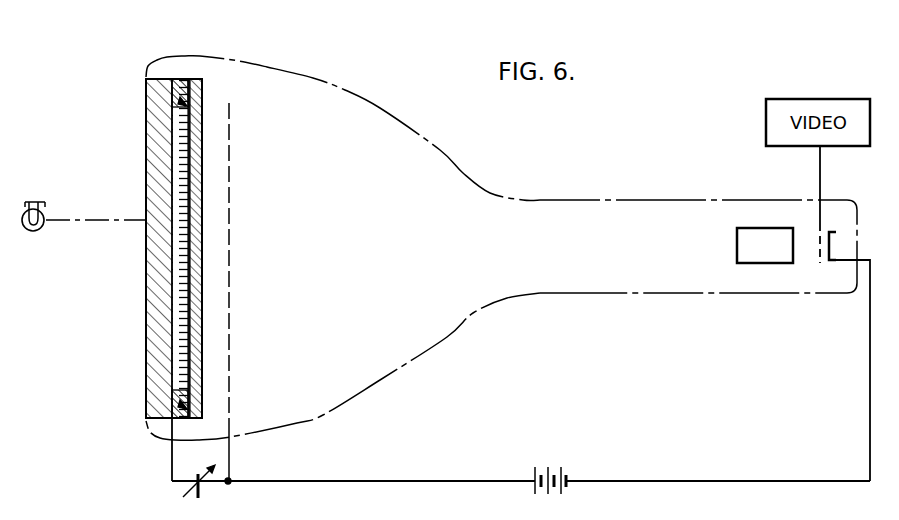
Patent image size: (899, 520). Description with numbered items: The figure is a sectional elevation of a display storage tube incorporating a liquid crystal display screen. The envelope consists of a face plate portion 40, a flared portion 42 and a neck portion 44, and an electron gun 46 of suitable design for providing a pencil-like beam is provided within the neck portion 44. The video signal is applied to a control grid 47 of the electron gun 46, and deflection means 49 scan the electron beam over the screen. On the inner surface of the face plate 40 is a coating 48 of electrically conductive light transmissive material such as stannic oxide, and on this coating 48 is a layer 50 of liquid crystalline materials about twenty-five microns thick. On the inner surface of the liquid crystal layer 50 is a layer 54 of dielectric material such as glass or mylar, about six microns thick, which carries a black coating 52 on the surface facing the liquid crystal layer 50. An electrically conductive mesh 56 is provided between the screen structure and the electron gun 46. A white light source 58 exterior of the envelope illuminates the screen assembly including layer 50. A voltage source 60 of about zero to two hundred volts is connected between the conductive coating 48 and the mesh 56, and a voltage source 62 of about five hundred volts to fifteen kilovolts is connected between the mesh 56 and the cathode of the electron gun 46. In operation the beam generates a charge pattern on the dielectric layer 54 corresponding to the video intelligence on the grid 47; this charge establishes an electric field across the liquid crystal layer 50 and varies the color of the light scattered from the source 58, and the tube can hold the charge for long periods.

The face plate portion 40 is at (146, 98).
The flared portion 42 is at (380, 108).
The neck portion 44 is at (652, 198).
The electron gun 46 is at (840, 262).
The control grid 47 is at (822, 262).
The coating of electrically conductive light transmissive material 48 is at (175, 136).
The deflection means 49 is at (737, 233).
The layer of liquid crystalline materials 50 is at (181, 168).
The black coating 52 is at (189, 82).
The layer of dielectric material 54 is at (203, 99).
The electrically conductive mesh 56 is at (229, 221).
The light source 58 is at (36, 231).
The voltage source 60 is at (200, 471).
The voltage source 62 is at (546, 471).